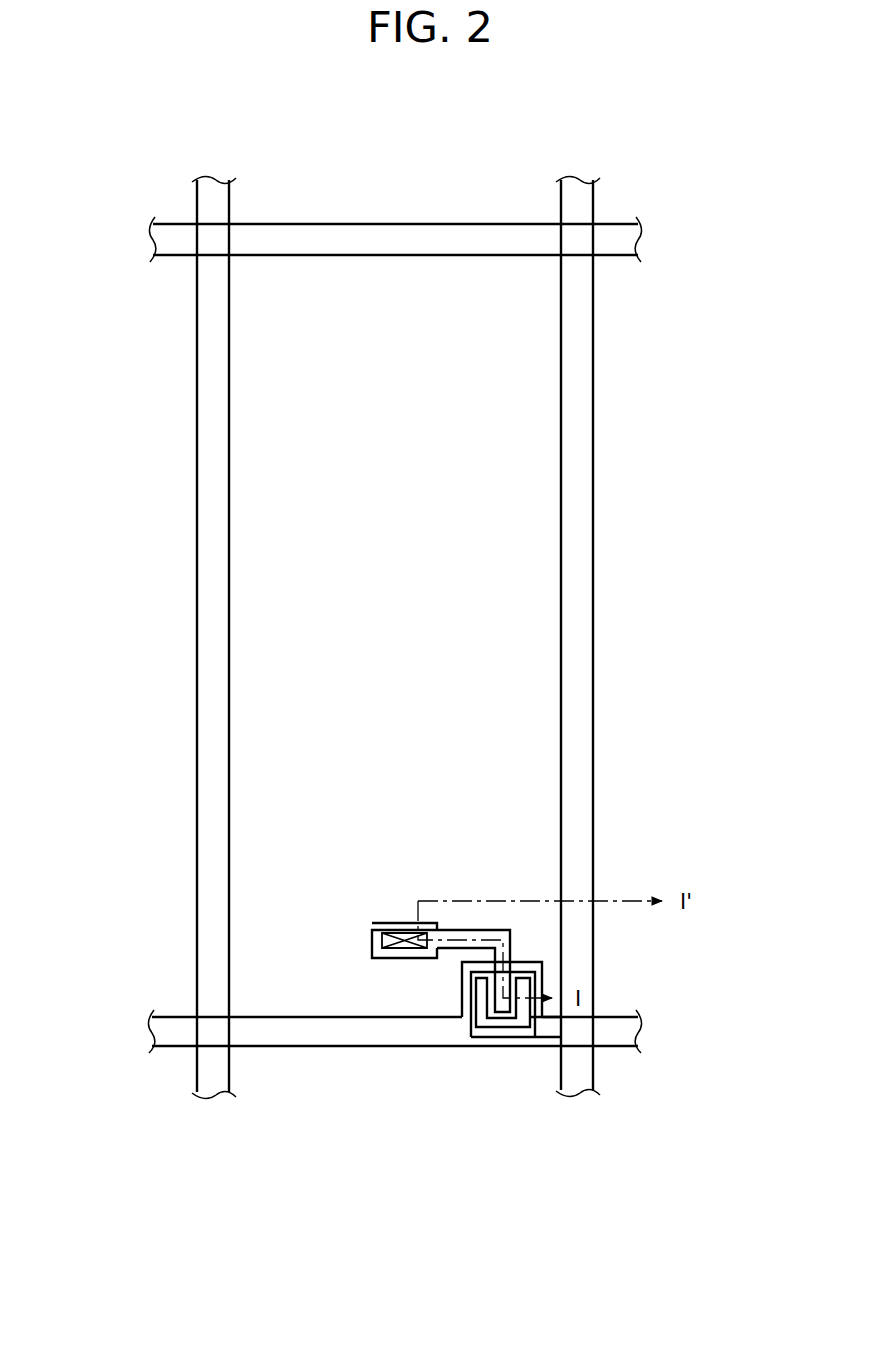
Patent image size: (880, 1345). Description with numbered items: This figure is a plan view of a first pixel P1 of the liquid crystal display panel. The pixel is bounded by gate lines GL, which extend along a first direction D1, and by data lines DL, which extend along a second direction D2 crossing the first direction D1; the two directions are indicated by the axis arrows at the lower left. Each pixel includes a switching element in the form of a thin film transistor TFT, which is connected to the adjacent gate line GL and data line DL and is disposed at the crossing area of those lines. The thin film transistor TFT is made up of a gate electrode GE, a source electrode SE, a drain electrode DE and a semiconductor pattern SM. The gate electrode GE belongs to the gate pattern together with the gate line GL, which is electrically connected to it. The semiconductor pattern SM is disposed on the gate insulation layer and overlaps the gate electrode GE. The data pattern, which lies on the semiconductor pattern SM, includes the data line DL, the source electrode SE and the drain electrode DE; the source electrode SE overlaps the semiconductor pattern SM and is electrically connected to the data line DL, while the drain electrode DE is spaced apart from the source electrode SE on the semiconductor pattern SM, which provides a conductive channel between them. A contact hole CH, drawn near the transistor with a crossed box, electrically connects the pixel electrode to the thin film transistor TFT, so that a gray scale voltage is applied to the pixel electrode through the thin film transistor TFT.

The gate line GL is at (160, 237).
The data line DL is at (575, 182).
The first pixel P1 is at (315, 184).
The contact hole CH is at (403, 933).
The thin film transistor TFT is at (501, 1071).
The gate electrode GE is at (463, 986).
The source electrode SE is at (482, 1027).
The drain electrode DE is at (502, 1013).
The semiconductor pattern SM is at (527, 1037).
The first direction D1 is at (105, 1170).
The second direction D2 is at (105, 1170).